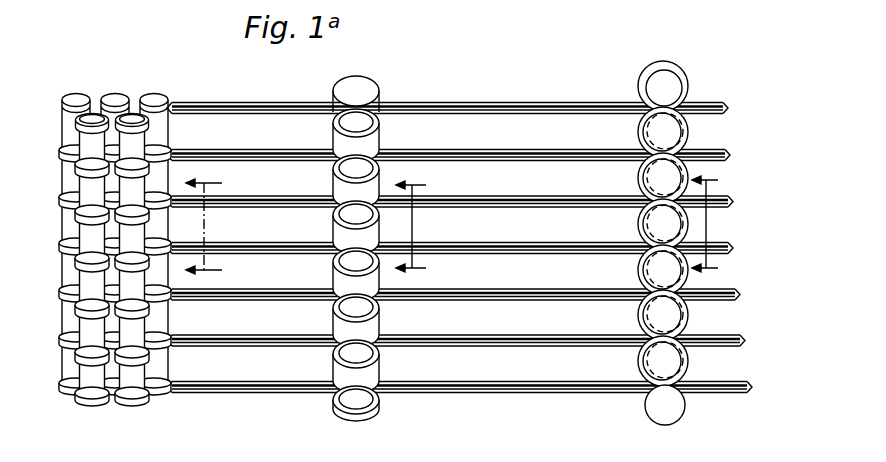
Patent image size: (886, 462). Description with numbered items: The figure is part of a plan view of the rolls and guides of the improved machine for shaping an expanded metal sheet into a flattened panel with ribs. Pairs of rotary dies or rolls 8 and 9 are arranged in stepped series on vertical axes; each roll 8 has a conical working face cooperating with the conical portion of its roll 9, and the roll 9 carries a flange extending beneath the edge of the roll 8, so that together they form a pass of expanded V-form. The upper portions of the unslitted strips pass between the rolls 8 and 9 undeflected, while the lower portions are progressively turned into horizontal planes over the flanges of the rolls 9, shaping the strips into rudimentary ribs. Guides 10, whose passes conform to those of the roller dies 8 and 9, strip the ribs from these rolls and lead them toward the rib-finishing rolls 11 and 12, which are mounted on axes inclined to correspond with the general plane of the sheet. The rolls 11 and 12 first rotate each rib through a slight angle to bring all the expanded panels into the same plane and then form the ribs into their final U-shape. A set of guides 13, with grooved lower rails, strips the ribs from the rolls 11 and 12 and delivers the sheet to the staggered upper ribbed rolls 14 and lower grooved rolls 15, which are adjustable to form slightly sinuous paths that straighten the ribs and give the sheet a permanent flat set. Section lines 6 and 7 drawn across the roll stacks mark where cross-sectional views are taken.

The section line 6- 6 is at (711, 225).
The section line 7- 7 is at (418, 228).
The roll 8 is at (652, 132).
The roll 9 is at (656, 92).
The guides 10 is at (504, 250).
The rib-finishing roll 11 is at (340, 125).
The rib-finishing roll 12 is at (348, 92).
The guides 13 is at (257, 250).
The upper ribbed rolls 14 is at (128, 234).
The lower grooved rolls 15 is at (150, 96).